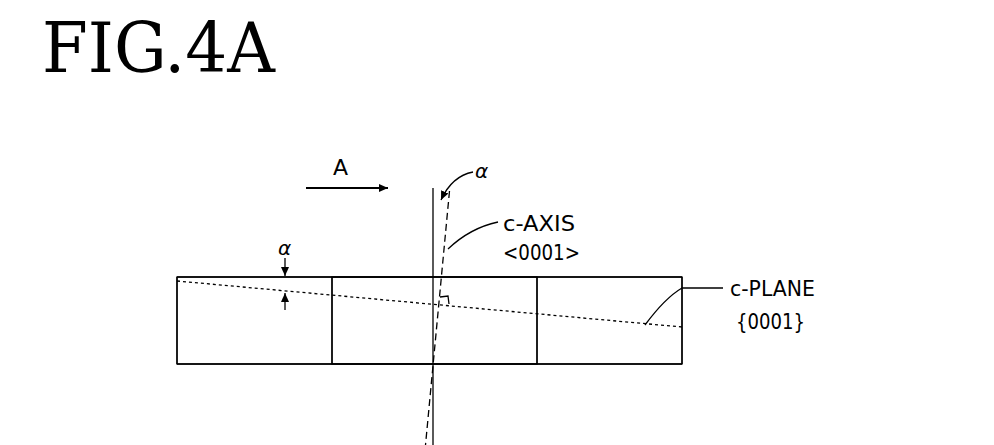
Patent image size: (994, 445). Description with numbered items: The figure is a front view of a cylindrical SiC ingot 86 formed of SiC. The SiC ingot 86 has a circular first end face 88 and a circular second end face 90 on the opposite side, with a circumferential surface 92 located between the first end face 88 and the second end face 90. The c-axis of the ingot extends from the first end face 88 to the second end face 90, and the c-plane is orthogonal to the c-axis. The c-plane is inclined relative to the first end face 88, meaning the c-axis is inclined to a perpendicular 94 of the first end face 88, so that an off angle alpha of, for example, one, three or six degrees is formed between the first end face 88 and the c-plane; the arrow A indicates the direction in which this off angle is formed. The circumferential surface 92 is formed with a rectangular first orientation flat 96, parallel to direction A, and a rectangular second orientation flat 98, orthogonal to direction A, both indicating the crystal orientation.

The SiC ingot 86 is at (172, 311).
The first end face 88 is at (620, 276).
The second end face 90 is at (222, 366).
The circumferential surface 92 is at (185, 337).
The perpendicular of the first end face 94 is at (432, 232).
The first orientation flat 96 is at (493, 348).
The second orientation flat 98 is at (683, 349).